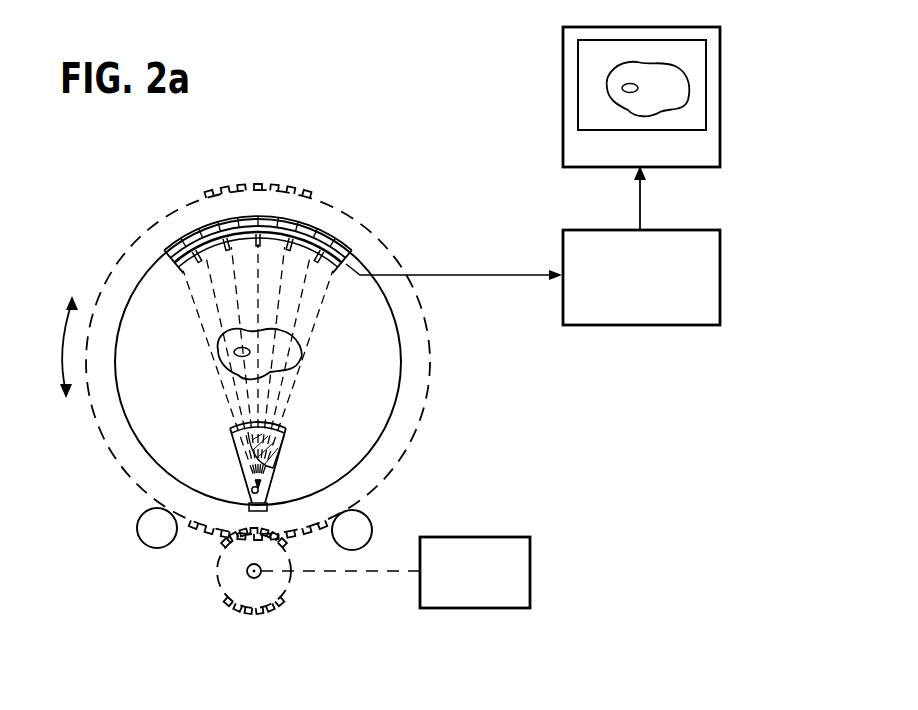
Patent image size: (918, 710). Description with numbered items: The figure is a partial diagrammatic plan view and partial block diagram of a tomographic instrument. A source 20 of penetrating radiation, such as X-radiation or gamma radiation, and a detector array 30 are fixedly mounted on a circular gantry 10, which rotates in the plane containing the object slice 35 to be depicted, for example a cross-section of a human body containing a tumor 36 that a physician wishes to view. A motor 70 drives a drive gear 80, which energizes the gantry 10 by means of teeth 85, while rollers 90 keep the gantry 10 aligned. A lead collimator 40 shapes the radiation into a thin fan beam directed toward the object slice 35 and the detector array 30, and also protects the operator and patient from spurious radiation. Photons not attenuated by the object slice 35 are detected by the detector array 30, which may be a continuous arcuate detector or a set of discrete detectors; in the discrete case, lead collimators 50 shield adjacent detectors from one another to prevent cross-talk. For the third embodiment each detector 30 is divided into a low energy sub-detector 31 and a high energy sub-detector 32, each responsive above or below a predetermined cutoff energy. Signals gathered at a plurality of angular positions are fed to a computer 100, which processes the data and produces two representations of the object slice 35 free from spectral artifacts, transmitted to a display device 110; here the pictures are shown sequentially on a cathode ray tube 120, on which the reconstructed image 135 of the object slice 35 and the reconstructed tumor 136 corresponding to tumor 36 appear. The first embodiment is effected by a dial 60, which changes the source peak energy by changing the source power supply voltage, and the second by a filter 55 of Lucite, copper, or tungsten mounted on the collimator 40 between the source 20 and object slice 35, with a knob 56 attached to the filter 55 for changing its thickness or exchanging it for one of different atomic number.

The gantry 10 is at (406, 438).
The source 20 is at (252, 487).
The detector array 30 is at (257, 210).
The low energy sub-detector 31 is at (170, 252).
The high energy sub-detector 32 is at (184, 248).
The object slice 35 is at (232, 365).
The tumor 36 is at (236, 362).
The collimator 40 is at (269, 450).
The collimators 50 is at (318, 270).
The filter 55 is at (286, 428).
The knob 56 is at (295, 434).
The dial 60 is at (276, 506).
The motor 70 is at (480, 593).
The drive gear 80 is at (268, 596).
The teeth 85 is at (238, 603).
The rollers 90 is at (137, 528).
The computer 100 is at (672, 313).
The display device 110 is at (642, 97).
The cathode ray tube 120 is at (697, 63).
The reconstructed object slice image 135 is at (617, 72).
The reconstructed tumor 136 is at (622, 88).